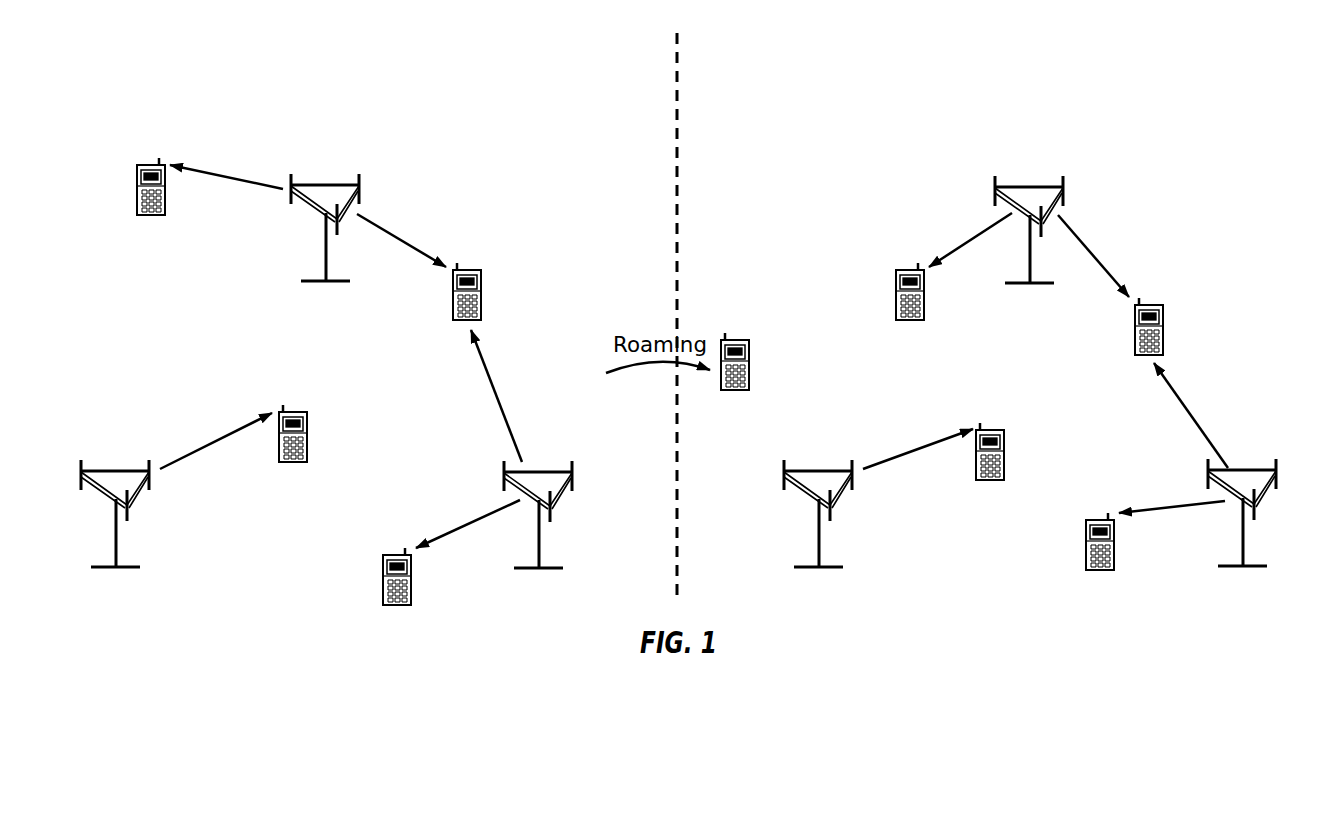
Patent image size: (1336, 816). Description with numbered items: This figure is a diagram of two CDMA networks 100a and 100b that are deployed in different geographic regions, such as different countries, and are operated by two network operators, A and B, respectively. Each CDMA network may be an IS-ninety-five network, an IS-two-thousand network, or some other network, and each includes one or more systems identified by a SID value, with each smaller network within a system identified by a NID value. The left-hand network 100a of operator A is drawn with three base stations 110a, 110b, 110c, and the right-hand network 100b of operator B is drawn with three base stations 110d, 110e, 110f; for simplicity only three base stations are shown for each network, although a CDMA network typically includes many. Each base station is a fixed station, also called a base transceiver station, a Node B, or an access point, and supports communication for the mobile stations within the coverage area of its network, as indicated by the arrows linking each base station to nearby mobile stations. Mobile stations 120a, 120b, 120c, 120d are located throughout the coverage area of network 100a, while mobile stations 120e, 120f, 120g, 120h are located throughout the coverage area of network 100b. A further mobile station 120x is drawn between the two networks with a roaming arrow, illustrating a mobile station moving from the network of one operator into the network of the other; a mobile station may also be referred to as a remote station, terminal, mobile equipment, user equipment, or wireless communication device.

The CDMA network 100a is at (540, 139).
The CDMA network 100b is at (1244, 139).
The base station 110a is at (322, 184).
The base station 110b is at (111, 470).
The base station 110c is at (534, 470).
The base station 110d is at (1026, 186).
The base station 110e is at (816, 470).
The base station 110f is at (1240, 469).
The mobile station 120a is at (148, 164).
The mobile station 120b is at (470, 269).
The mobile station 120c is at (296, 411).
The mobile station 120d is at (394, 554).
The mobile station 120e is at (907, 269).
The mobile station 120f is at (1152, 304).
The mobile station 120g is at (1002, 419).
The mobile station 120h is at (1096, 519).
The mobile station 120x is at (738, 339).